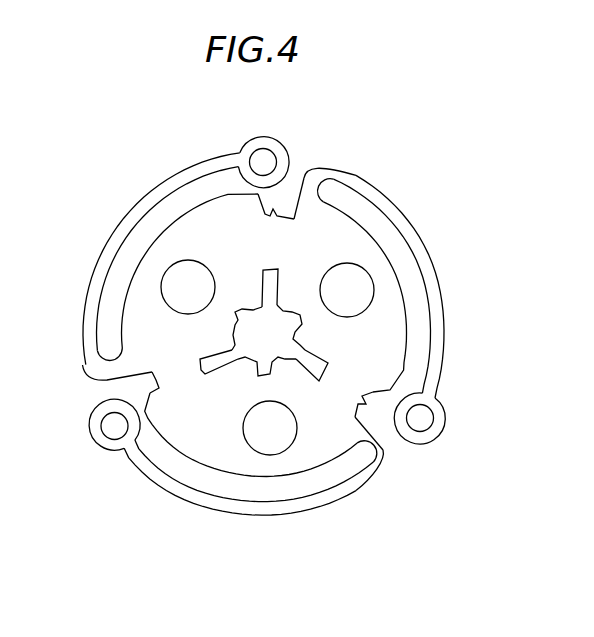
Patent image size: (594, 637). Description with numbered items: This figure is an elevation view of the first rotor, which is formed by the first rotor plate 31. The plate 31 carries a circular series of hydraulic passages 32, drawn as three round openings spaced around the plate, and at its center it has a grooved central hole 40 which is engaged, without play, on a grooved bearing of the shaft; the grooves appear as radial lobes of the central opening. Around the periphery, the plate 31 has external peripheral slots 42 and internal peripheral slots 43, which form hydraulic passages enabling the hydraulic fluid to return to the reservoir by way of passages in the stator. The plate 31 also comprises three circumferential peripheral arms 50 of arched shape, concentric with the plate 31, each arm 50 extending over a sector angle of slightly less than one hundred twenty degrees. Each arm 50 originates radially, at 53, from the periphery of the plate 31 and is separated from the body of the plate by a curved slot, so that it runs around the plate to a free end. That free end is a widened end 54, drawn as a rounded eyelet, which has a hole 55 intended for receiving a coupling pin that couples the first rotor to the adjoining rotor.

The first rotor plate 31 is at (392, 206).
The hydraulic passages 32 is at (193, 268).
The grooved central hole 40 is at (257, 358).
The external peripheral slots 42 is at (266, 218).
The internal peripheral slots 43 is at (282, 280).
The circumferential peripheral arms 50 is at (425, 244).
The arm origin 53 is at (306, 173).
The widened end 54 is at (281, 145).
The hole 55 is at (259, 160).